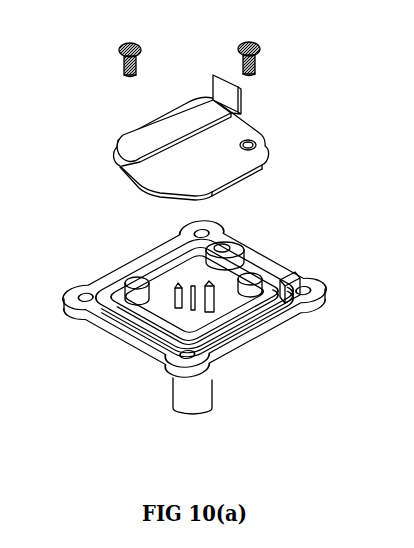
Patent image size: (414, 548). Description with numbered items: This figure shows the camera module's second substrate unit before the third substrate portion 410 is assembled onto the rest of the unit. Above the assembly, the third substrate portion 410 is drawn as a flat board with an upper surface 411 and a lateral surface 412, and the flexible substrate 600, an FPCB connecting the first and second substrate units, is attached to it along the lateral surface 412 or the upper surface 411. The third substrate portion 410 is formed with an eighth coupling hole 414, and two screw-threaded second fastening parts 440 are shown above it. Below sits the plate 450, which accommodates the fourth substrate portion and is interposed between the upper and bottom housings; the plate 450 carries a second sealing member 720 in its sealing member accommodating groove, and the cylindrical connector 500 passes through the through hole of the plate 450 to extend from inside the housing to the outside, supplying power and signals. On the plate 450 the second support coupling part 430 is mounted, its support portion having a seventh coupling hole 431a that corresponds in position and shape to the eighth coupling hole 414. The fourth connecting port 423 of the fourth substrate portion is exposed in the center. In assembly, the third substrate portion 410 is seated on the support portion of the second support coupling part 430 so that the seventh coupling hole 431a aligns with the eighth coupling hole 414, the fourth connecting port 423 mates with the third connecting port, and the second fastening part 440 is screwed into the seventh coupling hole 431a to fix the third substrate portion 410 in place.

The second fastening part 440 is at (260, 44).
The flexible substrate 600 is at (173, 140).
The upper surface 411 is at (245, 133).
The eighth coupling hole 414 is at (126, 150).
The third substrate portion 410 is at (238, 159).
The lateral surface 412 is at (232, 176).
The seventh coupling hole 431a is at (135, 277).
The second support coupling part 430 is at (93, 280).
The fourth connecting port 423 is at (240, 255).
The second sealing member 720 is at (293, 278).
The plate 450 is at (322, 298).
The connector 500 is at (203, 393).